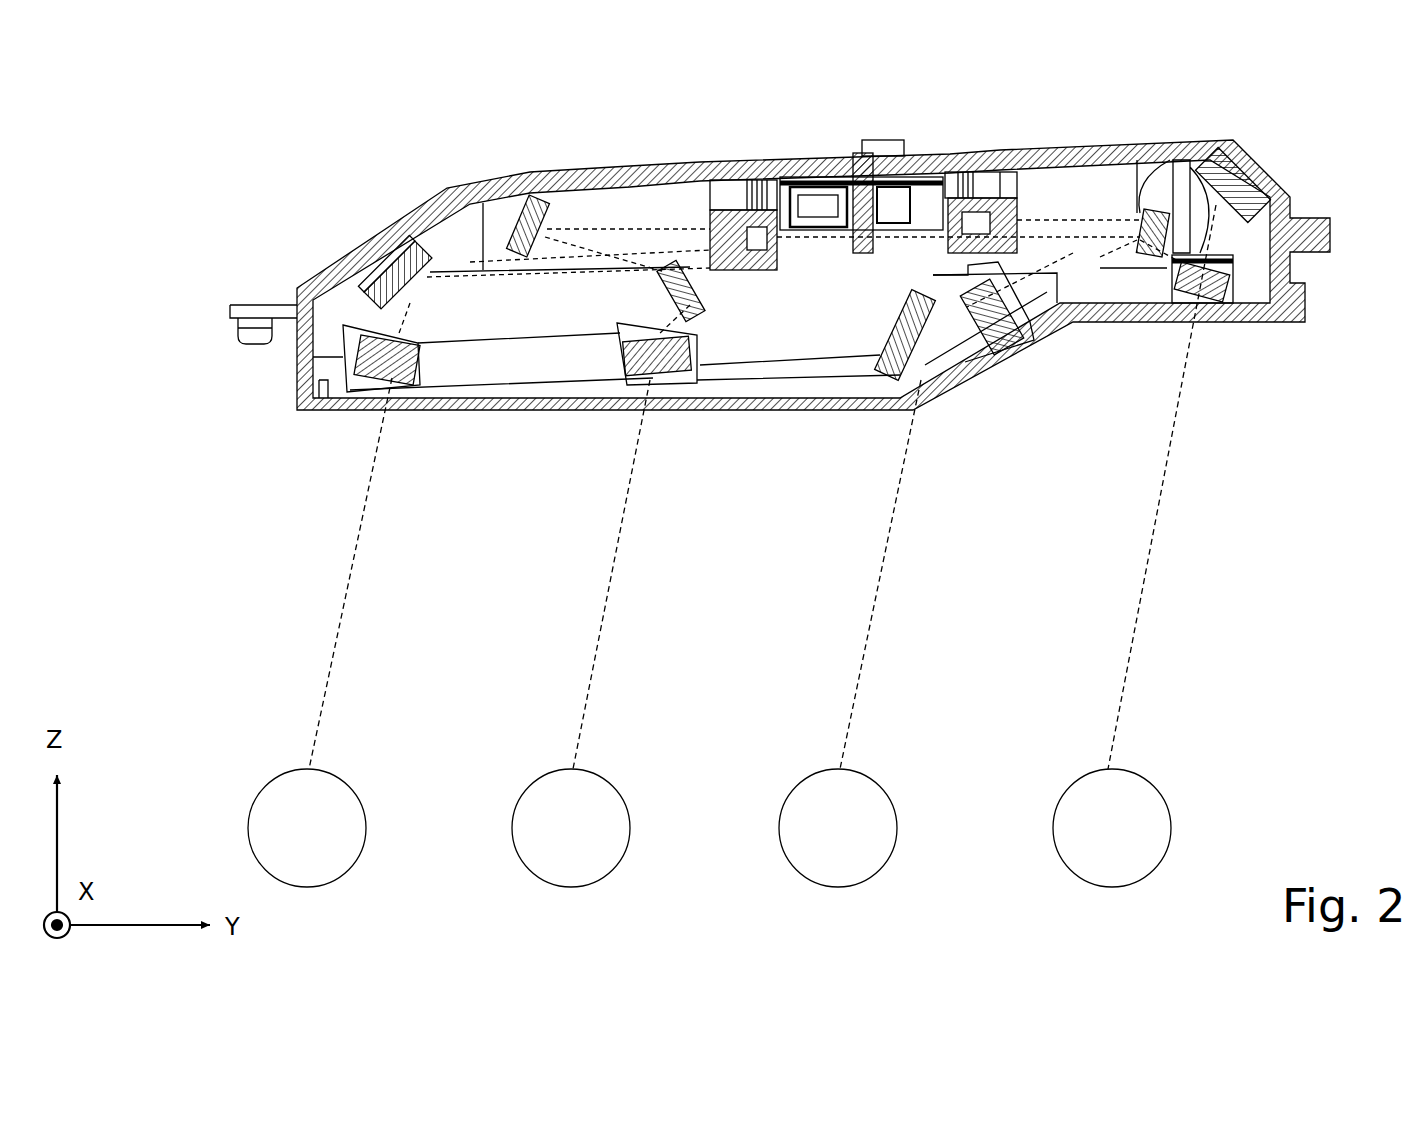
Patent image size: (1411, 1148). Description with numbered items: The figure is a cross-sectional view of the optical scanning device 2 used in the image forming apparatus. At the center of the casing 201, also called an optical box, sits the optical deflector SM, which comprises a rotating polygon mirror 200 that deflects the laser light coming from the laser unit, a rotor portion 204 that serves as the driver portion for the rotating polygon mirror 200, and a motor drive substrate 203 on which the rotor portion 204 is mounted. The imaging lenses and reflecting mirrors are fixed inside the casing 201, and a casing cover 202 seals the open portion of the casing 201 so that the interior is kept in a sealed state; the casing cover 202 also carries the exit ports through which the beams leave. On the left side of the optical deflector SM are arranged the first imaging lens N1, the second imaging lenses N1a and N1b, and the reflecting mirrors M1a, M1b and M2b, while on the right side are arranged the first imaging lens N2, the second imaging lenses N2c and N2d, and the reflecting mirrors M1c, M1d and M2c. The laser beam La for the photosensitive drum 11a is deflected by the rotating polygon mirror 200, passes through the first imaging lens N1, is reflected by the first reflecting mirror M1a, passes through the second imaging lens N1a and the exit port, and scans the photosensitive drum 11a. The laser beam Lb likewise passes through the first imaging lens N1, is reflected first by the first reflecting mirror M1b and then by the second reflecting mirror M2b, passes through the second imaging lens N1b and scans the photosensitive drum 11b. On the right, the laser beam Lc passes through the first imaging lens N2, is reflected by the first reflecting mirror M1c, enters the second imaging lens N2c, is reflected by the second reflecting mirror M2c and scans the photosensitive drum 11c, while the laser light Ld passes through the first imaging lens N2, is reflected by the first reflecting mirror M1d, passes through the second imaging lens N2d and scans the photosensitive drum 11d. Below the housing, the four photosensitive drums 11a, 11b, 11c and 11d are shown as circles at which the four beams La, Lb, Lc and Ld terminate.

The optical scanning device 2 is at (418, 193).
The casing 201 is at (300, 290).
The casing cover 202 is at (324, 400).
The rotating polygon mirror 200 is at (808, 158).
The motor drive substrate 203 is at (852, 150).
The rotor portion 204 is at (912, 138).
The optical deflector SM is at (834, 256).
The first imaging lens N1 is at (703, 166).
The first imaging lens N2 is at (1003, 150).
The first reflecting mirror M1a is at (372, 256).
The first reflecting mirror M1b is at (525, 198).
The first reflecting mirror M1c is at (1160, 160).
The first reflecting mirror M1d is at (1240, 152).
The second reflecting mirror M2b is at (730, 378).
The second reflecting mirror M2c is at (895, 382).
The second imaging lens N1a is at (344, 376).
The second imaging lens N1b is at (653, 385).
The second imaging lens N2c is at (1015, 352).
The second imaging lens N2d is at (1240, 323).
The laser beam La is at (350, 580).
The laser beam Lb is at (610, 578).
The laser beam Lc is at (870, 597).
The laser light Ld is at (1140, 592).
The photosensitive drum 11a is at (267, 782).
The photosensitive drum 11b is at (546, 780).
The photosensitive drum 11c is at (808, 782).
The photosensitive drum 11d is at (1068, 788).